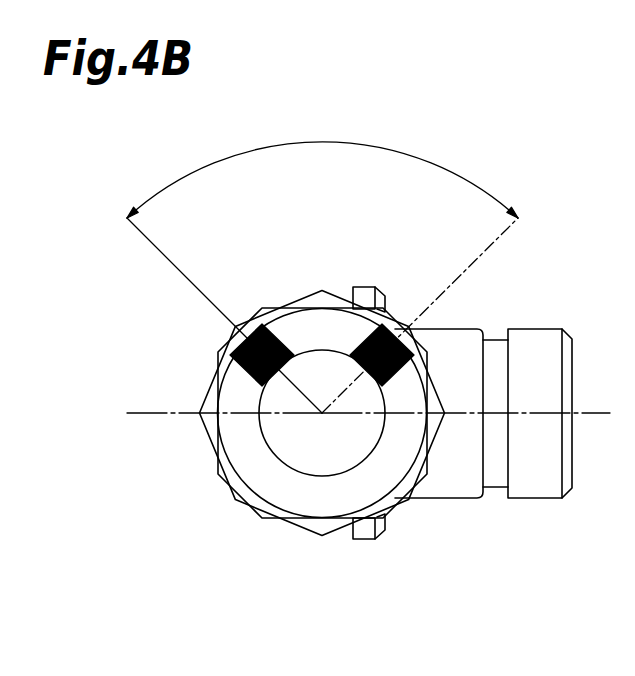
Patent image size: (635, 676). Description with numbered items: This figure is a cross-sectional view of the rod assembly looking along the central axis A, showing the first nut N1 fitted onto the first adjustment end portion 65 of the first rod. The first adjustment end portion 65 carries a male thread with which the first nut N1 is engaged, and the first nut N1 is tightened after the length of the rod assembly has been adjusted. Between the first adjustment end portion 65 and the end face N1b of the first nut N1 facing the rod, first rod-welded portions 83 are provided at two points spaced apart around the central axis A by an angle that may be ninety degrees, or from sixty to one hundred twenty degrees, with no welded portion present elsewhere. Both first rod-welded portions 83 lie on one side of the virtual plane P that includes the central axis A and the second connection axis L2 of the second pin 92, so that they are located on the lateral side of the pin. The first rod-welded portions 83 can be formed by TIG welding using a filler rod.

The first nut N1 is at (200, 447).
The end face of the first nut N1b is at (320, 330).
The first adjustment end portion 65 is at (330, 445).
The first rod-welded portions 83 is at (262, 322).
The second pin 92 is at (540, 500).
The central axis A is at (322, 413).
The virtual plane P is at (155, 412).
The second connection axis L2 is at (476, 377).